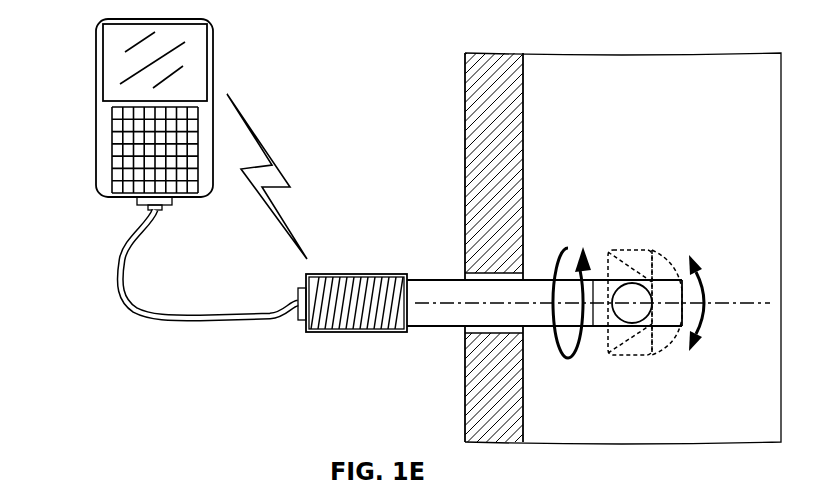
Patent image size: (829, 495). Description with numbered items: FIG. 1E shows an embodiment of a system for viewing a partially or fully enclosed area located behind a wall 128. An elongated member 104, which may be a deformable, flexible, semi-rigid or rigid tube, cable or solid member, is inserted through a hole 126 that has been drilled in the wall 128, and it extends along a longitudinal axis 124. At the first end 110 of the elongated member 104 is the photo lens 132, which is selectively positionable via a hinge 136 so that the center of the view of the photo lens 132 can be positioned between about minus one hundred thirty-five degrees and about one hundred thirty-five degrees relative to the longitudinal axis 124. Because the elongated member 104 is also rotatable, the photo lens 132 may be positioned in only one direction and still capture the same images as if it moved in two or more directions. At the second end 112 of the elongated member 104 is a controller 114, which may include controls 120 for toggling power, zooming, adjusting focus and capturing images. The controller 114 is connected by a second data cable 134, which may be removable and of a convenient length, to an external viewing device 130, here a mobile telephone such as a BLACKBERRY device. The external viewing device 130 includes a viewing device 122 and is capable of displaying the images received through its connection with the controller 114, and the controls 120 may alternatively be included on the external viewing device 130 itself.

The elongated member 104 is at (437, 328).
The first end 110 is at (674, 248).
The second end 112 is at (343, 266).
The controller 114 is at (106, 147).
The controls 120 is at (197, 183).
The viewing device 122 is at (190, 52).
The longitudinal axis 124 is at (745, 303).
The hole 126 is at (534, 270).
The wall 128 is at (510, 191).
The external viewing device 130 is at (106, 214).
The photo lens 132 is at (688, 340).
The second data cable 134 is at (133, 290).
The hinge 136 is at (626, 293).